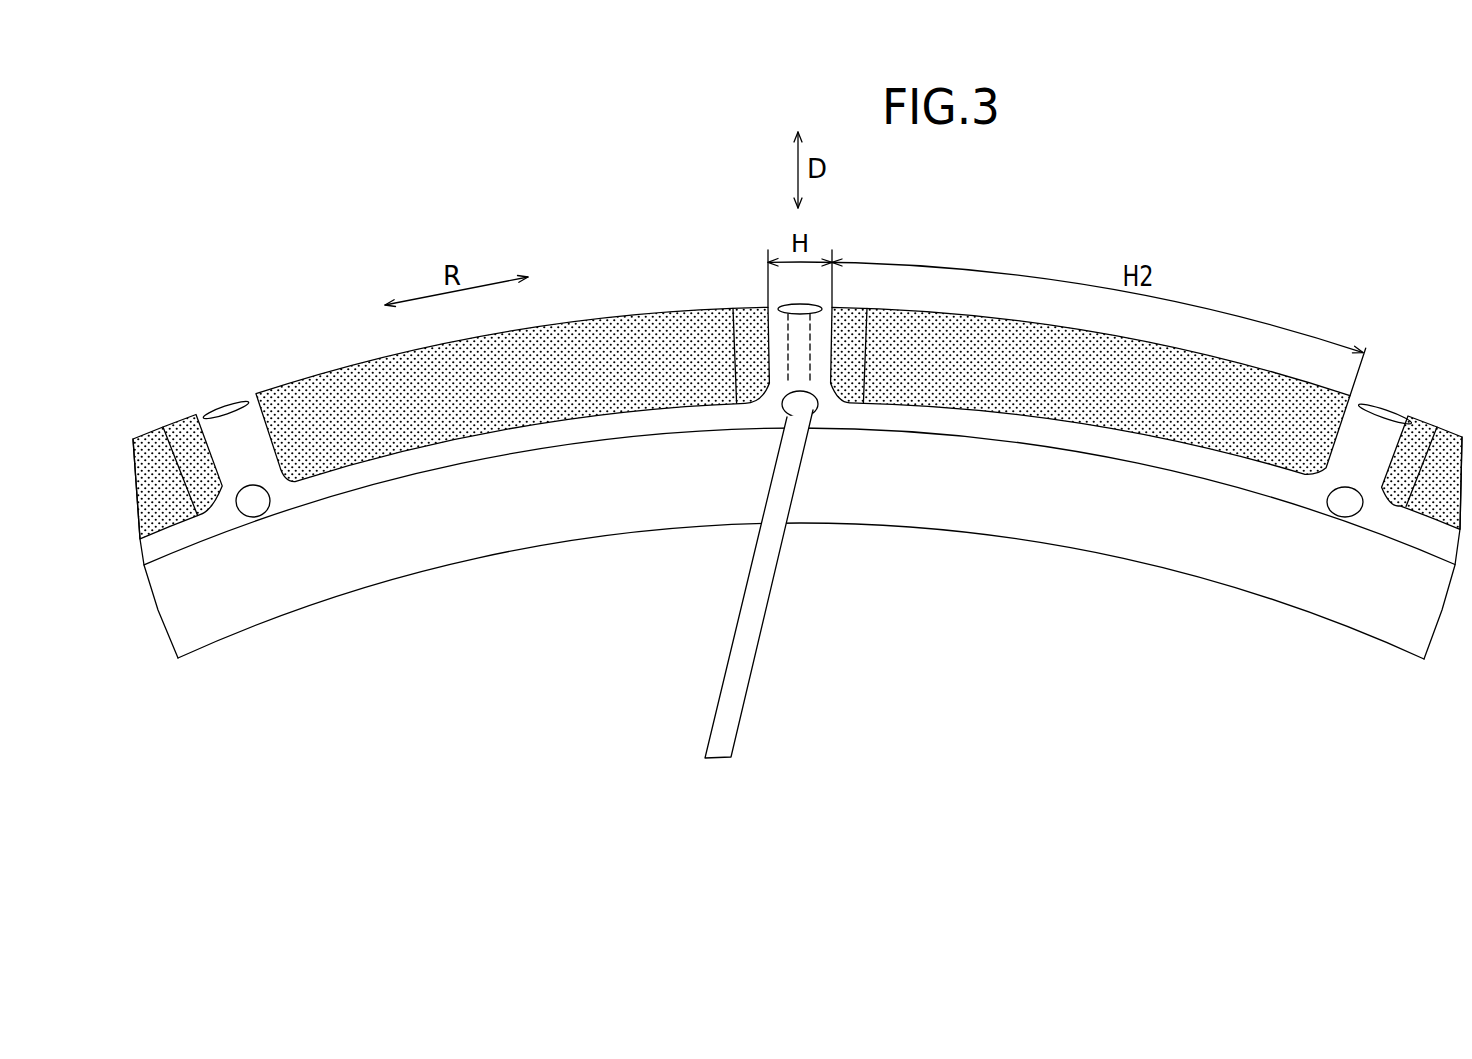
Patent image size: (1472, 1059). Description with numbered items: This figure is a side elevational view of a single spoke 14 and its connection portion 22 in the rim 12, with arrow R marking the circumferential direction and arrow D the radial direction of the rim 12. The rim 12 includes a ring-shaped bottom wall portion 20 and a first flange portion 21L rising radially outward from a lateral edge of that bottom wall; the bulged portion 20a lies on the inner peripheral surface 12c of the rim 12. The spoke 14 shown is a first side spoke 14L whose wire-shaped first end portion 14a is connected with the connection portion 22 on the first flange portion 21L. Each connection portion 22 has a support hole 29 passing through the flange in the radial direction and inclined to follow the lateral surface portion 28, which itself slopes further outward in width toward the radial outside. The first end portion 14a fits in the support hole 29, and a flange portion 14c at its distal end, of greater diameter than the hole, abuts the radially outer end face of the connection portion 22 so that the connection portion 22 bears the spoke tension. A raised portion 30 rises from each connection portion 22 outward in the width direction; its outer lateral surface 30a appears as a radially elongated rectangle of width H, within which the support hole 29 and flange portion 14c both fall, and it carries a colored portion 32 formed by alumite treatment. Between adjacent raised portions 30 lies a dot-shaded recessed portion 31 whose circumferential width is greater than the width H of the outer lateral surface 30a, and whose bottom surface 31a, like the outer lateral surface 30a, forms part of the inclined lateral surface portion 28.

The rim 12 is at (1187, 350).
The inner peripheral surface 12c is at (1048, 541).
The spoke 14 is at (748, 685).
The first end portion 14a is at (815, 348).
The flange portion 14c is at (800, 307).
The first side spoke 14L is at (730, 727).
The bottom wall portion 20 is at (1088, 492).
The bulged portion 20a is at (992, 537).
The first flange portion 21L is at (958, 360).
The connection portion 22 is at (765, 307).
The lateral surface portion 28 is at (650, 353).
The support hole 29 is at (255, 500).
The raised portion 30 is at (765, 342).
The outer lateral surface 30a is at (778, 333).
The recessed portion 31 is at (567, 342).
The bottom surface 31a is at (598, 360).
The colored portion 32 is at (253, 460).